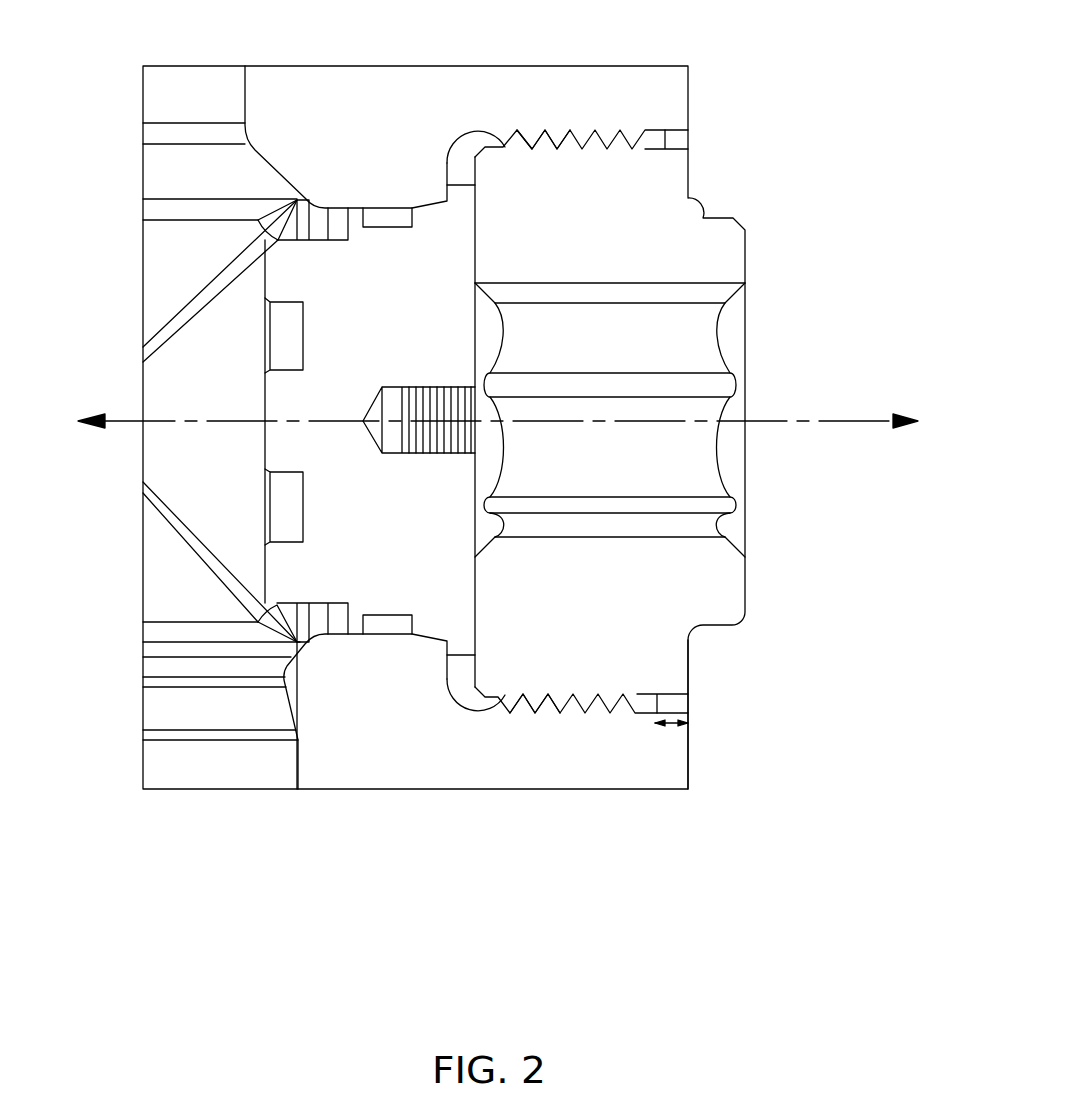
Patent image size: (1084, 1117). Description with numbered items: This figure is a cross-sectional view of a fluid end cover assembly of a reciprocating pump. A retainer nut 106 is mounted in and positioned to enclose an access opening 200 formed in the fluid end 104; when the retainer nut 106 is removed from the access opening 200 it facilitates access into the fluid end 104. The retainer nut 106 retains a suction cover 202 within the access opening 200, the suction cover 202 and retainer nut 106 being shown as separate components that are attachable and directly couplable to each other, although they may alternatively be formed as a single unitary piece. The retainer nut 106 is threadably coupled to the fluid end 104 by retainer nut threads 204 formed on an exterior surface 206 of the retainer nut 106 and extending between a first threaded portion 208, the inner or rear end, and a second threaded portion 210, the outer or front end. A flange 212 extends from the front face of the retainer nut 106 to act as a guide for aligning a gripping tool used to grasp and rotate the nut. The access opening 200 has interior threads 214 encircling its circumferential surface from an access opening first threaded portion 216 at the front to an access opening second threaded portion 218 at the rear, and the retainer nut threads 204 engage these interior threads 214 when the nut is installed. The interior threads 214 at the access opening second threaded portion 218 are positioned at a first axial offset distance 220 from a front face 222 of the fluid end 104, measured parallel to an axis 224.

The fluid end 104 is at (340, 710).
The retainer nut 106 is at (498, 178).
The access opening 200 is at (695, 140).
The suction cover 202 is at (288, 573).
The retainer nut threads 204 is at (593, 131).
The exterior surface 206 is at (486, 132).
The first threaded portion 208 is at (497, 707).
The second threaded portion 210 is at (652, 132).
The flange 212 is at (727, 602).
The interior threads 214 is at (543, 710).
The access opening first threaded portion 216 is at (628, 737).
The access opening second threaded portion 218 is at (527, 122).
The first axial offset distance 220 is at (673, 728).
The front face 222 is at (688, 743).
The axis 224 is at (863, 418).